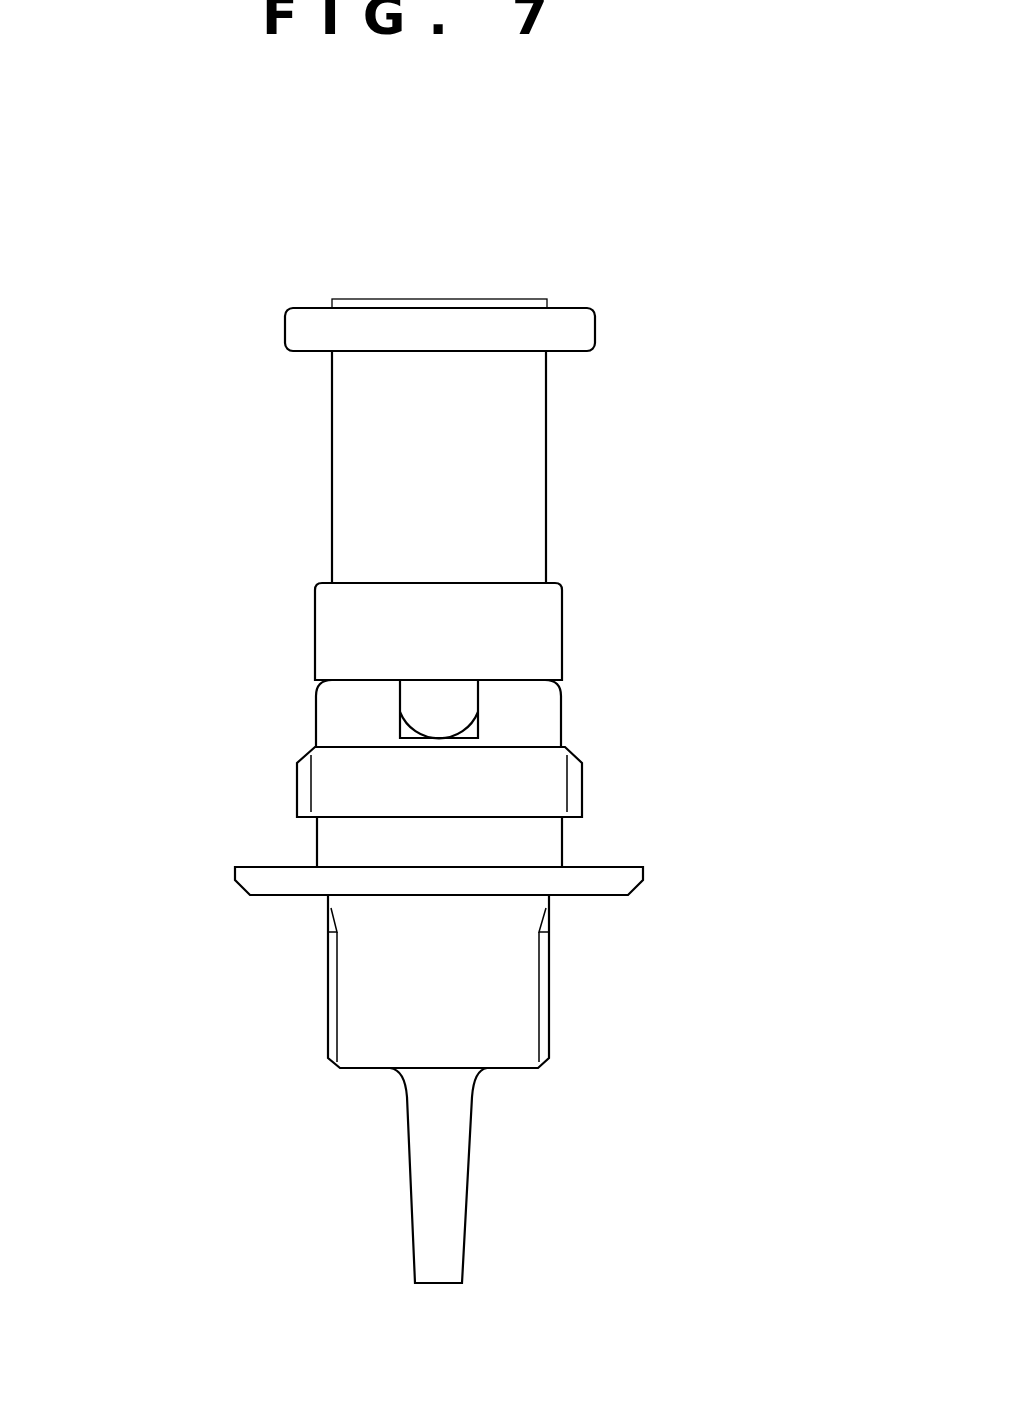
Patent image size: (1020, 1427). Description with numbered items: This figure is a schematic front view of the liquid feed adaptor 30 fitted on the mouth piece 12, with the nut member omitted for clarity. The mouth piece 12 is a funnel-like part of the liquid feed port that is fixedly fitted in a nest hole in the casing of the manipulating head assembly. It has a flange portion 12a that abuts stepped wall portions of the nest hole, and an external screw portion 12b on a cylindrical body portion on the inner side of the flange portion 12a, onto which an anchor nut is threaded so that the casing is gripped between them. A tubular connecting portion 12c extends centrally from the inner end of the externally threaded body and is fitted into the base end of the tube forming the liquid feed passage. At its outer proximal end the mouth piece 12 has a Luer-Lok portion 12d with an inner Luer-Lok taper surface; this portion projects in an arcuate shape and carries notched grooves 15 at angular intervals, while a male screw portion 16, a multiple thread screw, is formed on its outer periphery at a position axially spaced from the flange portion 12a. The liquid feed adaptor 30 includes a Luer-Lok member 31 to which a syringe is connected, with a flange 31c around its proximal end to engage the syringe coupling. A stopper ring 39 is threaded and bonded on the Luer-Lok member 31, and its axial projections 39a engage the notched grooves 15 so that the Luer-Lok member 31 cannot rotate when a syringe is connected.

The liquid feed adaptor 30 is at (566, 290).
The Luer-Lok member 31 is at (528, 438).
The flange 31c is at (292, 323).
The stopper ring 39 is at (340, 625).
The axial projections 39a is at (418, 709).
The Luer-Lok portion 12d is at (535, 708).
The notched grooves 15 is at (462, 738).
The male screw portion 16 is at (298, 773).
The flange portion 12a is at (252, 880).
The mouth piece 12 is at (312, 1034).
The external screw portion 12b is at (549, 1018).
The tubular connecting portion 12c is at (452, 1193).